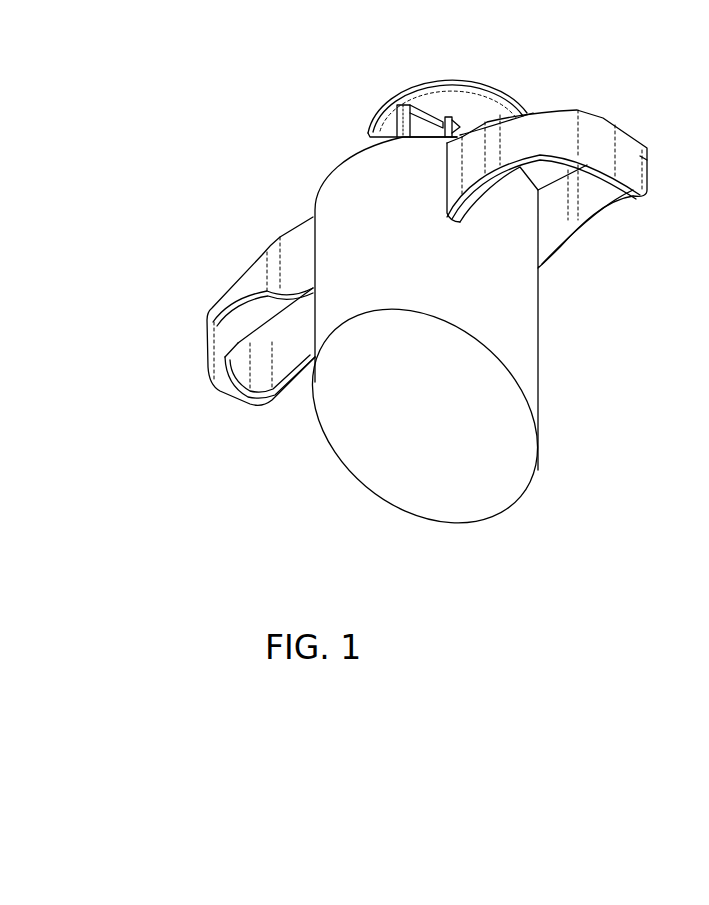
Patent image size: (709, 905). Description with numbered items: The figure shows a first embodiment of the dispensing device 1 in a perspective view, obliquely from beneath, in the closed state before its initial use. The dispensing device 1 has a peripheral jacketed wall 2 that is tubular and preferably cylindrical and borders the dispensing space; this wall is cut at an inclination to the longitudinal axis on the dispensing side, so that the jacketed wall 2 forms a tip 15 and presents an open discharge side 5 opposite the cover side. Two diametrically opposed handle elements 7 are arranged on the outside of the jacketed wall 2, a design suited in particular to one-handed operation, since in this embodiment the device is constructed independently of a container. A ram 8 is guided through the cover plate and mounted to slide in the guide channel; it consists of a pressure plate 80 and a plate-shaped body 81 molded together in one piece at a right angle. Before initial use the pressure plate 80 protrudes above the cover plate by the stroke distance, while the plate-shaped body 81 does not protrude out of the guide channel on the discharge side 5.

The dispensing device 1 is at (296, 145).
The peripheral jacketed wall 2 is at (512, 336).
The discharge side 5 is at (358, 518).
The handle elements 7 is at (257, 278).
The ram 8 is at (505, 78).
The tip 15 is at (510, 511).
The pressure plate 80 is at (381, 104).
The plate-shaped body 81 is at (428, 124).